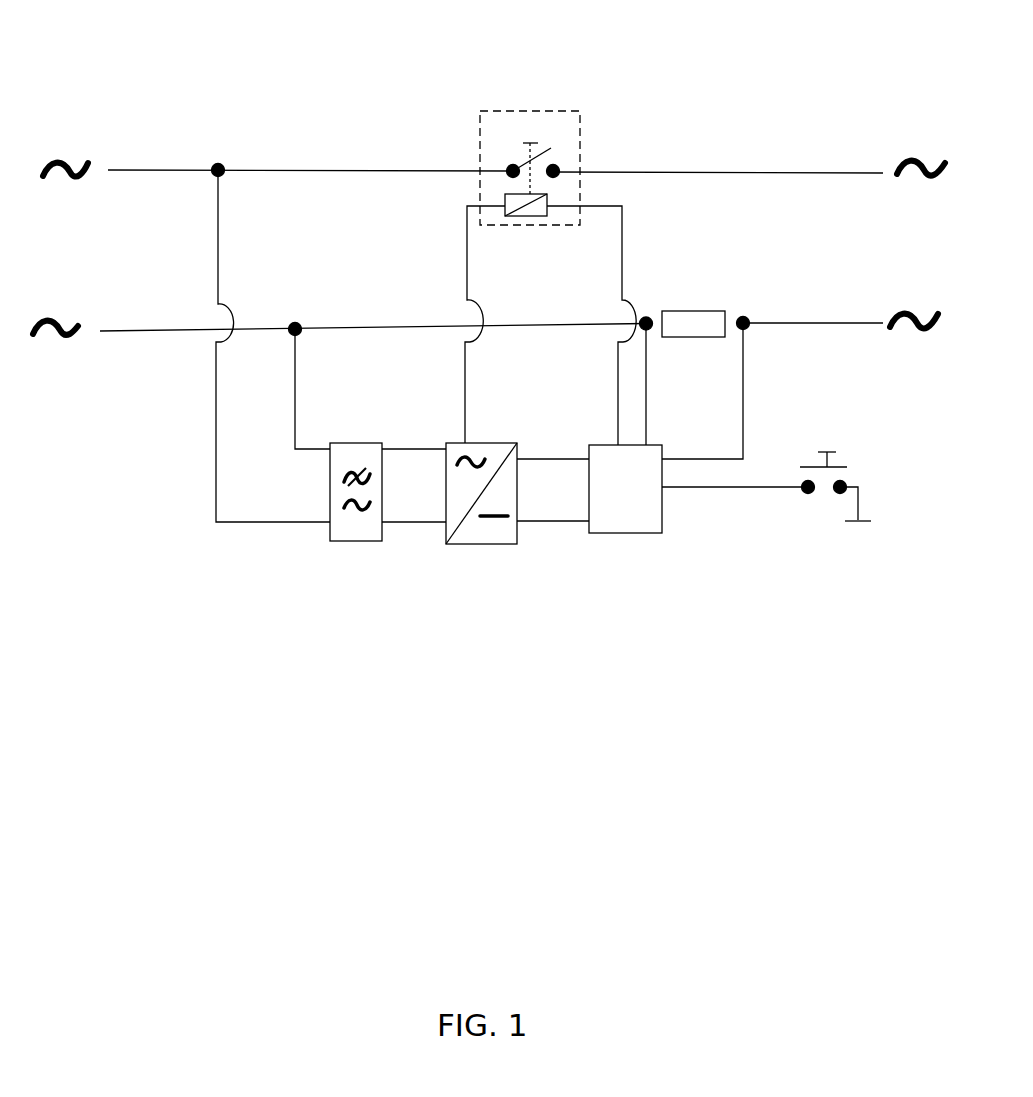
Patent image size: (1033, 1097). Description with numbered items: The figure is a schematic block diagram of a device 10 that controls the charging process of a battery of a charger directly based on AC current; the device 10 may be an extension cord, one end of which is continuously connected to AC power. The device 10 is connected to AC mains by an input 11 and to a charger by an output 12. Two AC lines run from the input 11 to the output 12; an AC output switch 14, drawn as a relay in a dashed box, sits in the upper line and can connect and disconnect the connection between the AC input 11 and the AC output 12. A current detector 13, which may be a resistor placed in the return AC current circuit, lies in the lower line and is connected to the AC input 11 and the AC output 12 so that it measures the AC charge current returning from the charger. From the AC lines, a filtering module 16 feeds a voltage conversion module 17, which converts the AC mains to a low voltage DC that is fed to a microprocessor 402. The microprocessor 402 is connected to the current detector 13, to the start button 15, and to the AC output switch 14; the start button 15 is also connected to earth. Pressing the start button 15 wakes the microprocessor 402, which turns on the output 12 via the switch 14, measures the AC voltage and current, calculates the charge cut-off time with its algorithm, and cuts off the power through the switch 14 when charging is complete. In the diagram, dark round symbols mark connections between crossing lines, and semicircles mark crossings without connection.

The device 10 is at (707, 683).
The input 11 is at (82, 178).
The output 12 is at (928, 180).
The current detector 13 is at (708, 338).
The AC output switch 14 is at (590, 104).
The start button 15 is at (842, 445).
The filtering module 16 is at (383, 542).
The voltage conversion module 17 is at (517, 545).
The microprocessor 402 is at (662, 534).